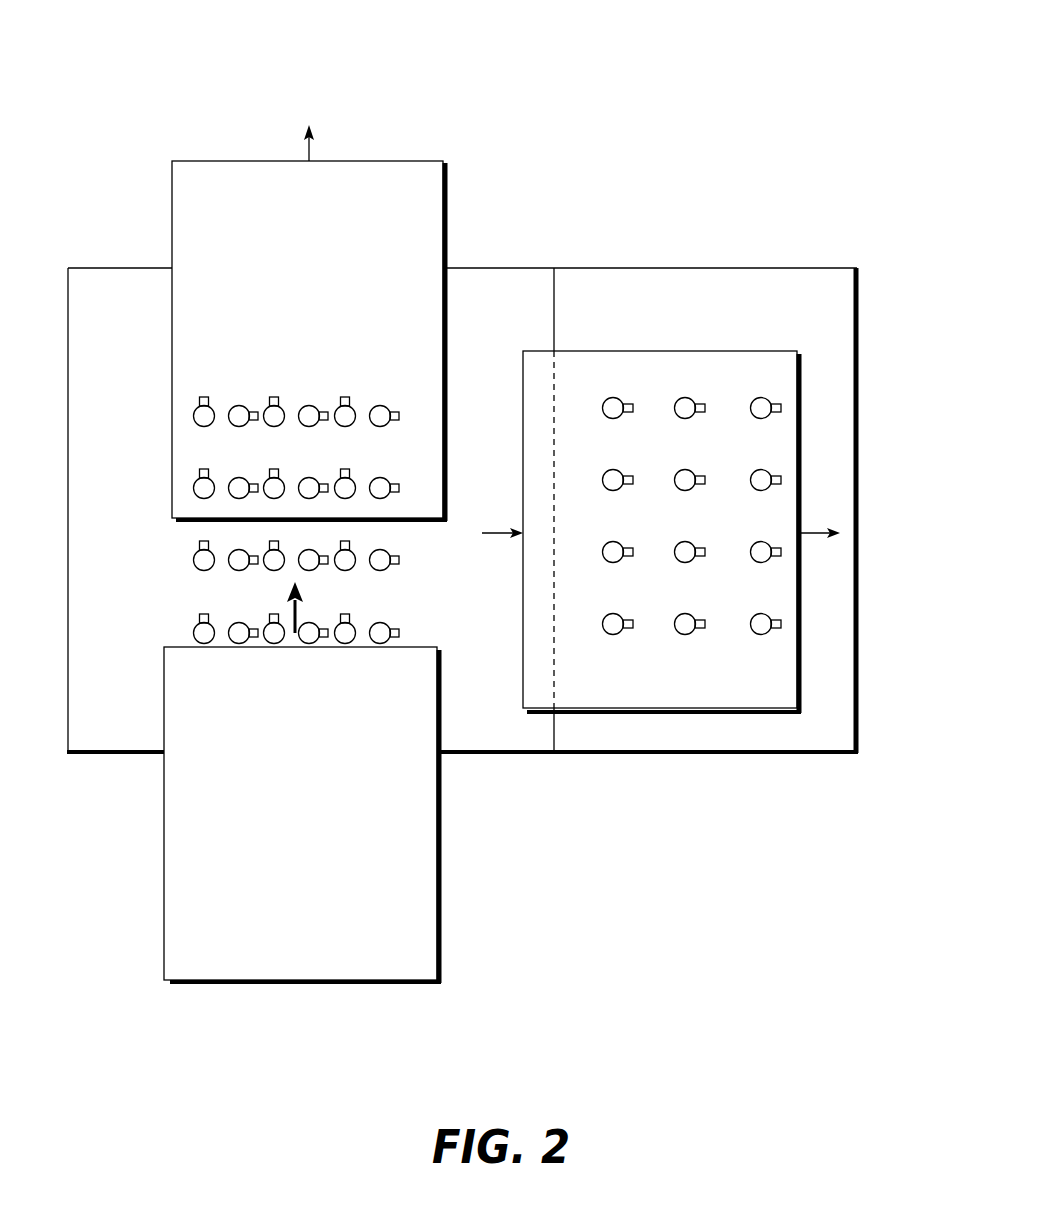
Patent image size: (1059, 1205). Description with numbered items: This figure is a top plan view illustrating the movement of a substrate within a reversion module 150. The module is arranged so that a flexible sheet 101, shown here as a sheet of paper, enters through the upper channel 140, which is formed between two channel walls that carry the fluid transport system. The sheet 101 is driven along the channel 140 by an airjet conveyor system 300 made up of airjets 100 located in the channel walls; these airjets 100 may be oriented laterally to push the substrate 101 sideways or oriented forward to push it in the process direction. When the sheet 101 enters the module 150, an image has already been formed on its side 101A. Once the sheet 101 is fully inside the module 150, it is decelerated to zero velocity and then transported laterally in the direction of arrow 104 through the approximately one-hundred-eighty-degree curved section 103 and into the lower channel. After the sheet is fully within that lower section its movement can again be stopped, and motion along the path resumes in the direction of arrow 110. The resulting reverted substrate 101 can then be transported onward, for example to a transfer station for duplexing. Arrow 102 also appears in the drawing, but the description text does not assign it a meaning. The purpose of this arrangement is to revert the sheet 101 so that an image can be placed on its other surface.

The reversion module 150 is at (790, 65).
The upper channel 140 is at (114, 773).
The airjet conveyor system 300 is at (180, 352).
The arrow 110 is at (313, 145).
The flexible sheet 101 is at (775, 512).
The side of the sheet 101A is at (231, 977).
The airjets 100 is at (196, 490).
The transport direction arrow 102 is at (298, 618).
The arrow 104 is at (494, 535).
The curved section 103 is at (747, 749).